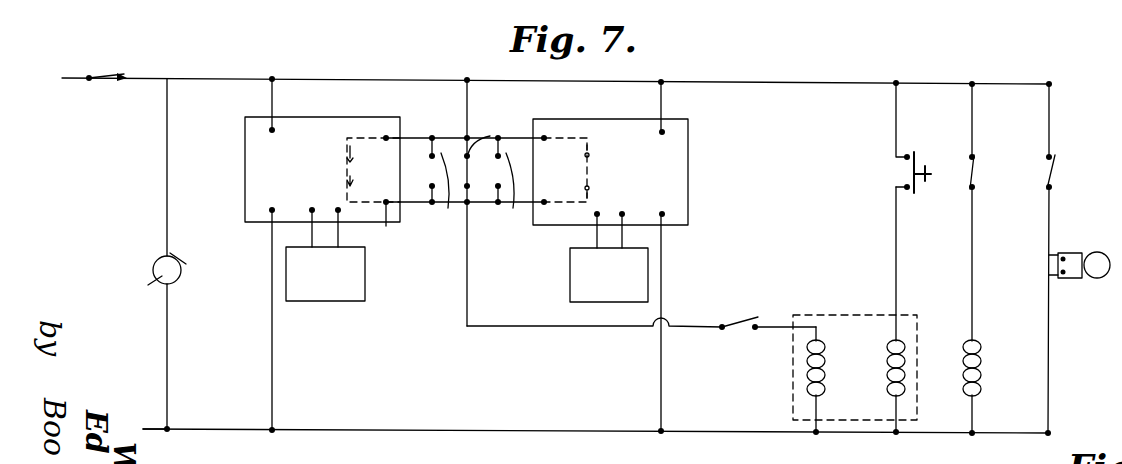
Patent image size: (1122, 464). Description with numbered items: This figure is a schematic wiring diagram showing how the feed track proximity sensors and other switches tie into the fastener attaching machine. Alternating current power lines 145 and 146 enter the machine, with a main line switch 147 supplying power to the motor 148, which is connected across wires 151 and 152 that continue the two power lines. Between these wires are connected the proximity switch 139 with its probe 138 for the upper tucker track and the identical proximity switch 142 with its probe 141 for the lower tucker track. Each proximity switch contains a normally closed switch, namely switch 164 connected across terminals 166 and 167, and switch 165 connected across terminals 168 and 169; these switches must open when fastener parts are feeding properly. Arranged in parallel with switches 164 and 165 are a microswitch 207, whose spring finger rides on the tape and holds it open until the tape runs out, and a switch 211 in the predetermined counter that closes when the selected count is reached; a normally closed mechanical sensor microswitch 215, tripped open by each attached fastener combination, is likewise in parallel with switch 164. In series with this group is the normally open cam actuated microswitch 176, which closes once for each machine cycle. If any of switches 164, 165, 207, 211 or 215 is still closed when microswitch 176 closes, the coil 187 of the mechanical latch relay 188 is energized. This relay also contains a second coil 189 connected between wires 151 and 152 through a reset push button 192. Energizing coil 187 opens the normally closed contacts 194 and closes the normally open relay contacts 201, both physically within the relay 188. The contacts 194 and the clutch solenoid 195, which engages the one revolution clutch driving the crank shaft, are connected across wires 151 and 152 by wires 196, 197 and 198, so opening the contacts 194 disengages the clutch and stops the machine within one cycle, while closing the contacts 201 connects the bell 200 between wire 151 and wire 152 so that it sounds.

The probe 138 is at (365, 280).
The proximity switch 139 is at (320, 117).
The probe 141 is at (570, 280).
The proximity switch 142 is at (612, 119).
The power line 145 is at (73, 76).
The power line 146 is at (148, 428).
The main line switch 147 is at (111, 75).
The motor 148 is at (158, 262).
The wire 151 is at (758, 80).
The wire 152 is at (392, 433).
The normally closed switch 164 is at (347, 168).
The normally closed switch 165 is at (587, 170).
The terminal 166 is at (386, 136).
The terminal 167 is at (387, 223).
The terminal 168 is at (545, 136).
The terminal 169 is at (544, 204).
The cam actuated microswitch 176 is at (738, 322).
The coil 187 is at (806, 375).
The mechanical latch relay 188 is at (856, 313).
The second coil 189 is at (888, 375).
The reset push button 192 is at (931, 172).
The normally closed contacts 194 is at (975, 160).
The solenoid 195 is at (983, 367).
The wire 196 is at (972, 107).
The wire 197 is at (972, 270).
The wire 198 is at (972, 418).
The bell 200 is at (1075, 280).
The normally open relay contacts 201 is at (1052, 168).
The microswitch 207 is at (435, 185).
The switch 211 is at (503, 185).
The normally closed microswitch 215 is at (486, 201).